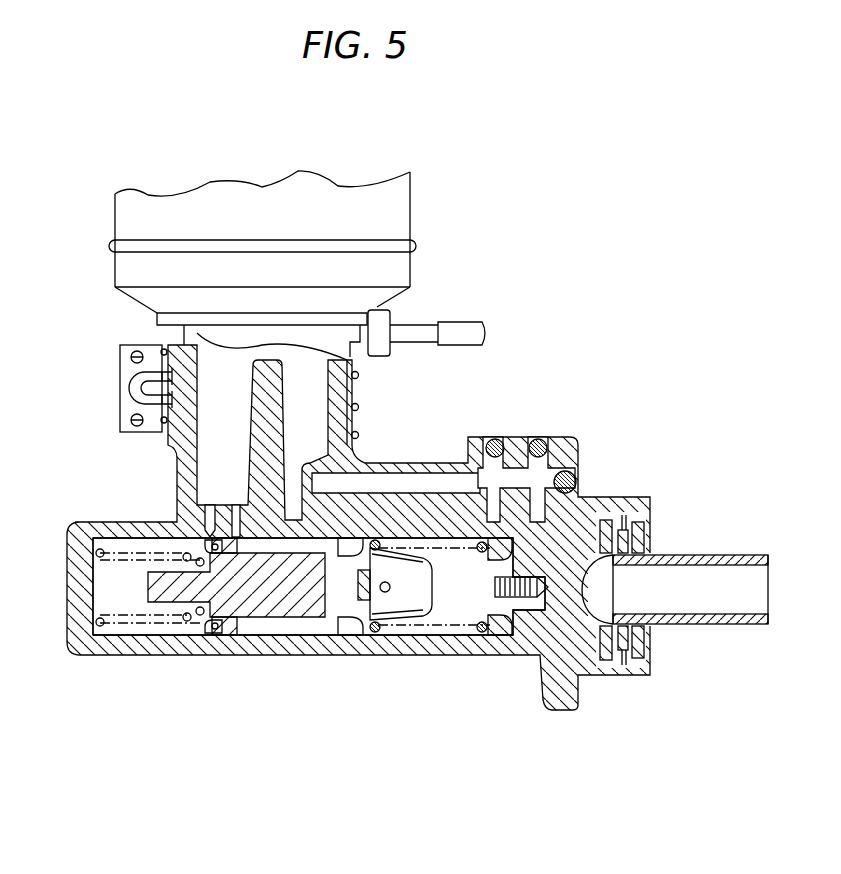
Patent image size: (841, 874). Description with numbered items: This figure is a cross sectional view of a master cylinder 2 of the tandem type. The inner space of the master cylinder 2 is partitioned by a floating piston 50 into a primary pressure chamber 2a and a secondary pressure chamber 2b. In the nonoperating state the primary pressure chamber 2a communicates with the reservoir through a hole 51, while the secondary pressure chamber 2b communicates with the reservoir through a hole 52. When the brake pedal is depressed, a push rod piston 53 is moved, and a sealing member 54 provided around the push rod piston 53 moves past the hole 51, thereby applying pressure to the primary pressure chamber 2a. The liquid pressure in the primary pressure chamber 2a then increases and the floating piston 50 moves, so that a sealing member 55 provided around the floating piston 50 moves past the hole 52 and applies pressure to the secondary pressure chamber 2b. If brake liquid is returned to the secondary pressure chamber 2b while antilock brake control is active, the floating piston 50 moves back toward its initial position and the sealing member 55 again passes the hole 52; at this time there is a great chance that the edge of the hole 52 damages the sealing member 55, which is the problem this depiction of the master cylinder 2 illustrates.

The master cylinder 2 is at (433, 455).
The primary pressure chamber 2a is at (455, 605).
The secondary pressure chamber 2b is at (122, 603).
The floating piston 50 is at (280, 597).
The hole 51 is at (540, 518).
The hole 52 is at (202, 522).
The push rod piston 53 is at (552, 600).
The sealing member 54 is at (515, 625).
The sealing member 55 is at (208, 628).